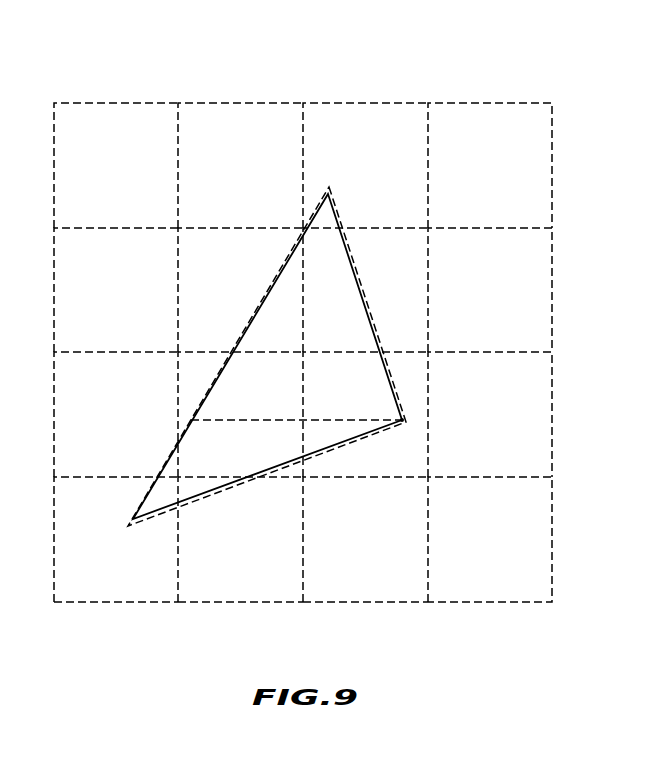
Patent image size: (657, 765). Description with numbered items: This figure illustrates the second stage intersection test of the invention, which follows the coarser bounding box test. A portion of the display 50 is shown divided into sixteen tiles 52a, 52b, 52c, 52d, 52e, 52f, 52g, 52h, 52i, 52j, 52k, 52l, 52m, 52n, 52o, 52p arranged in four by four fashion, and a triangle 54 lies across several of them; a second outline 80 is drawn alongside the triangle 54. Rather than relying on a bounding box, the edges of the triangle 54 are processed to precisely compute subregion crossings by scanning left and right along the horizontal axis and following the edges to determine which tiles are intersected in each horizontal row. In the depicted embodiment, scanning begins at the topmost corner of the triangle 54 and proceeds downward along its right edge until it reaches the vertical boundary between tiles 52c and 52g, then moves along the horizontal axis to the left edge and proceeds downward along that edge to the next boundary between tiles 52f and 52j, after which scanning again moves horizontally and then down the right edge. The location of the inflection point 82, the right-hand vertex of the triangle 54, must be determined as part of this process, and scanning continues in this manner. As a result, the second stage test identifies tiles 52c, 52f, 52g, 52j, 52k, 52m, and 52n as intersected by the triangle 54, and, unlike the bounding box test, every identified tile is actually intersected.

The display 50 is at (602, 61).
The tile 52a is at (110, 138).
The tile 52b is at (235, 138).
The tile 52c is at (418, 138).
The tile 52d is at (538, 138).
The tile 52e is at (110, 262).
The tile 52f is at (233, 262).
The tile 52g is at (414, 319).
The tile 52h is at (538, 262).
The tile 52i is at (110, 463).
The tile 52j is at (199, 362).
The tile 52k is at (414, 370).
The tile 52l is at (540, 463).
The tile 52m is at (112, 587).
The tile 52n is at (235, 587).
The tile 52o is at (420, 587).
The tile 52p is at (541, 587).
The triangle 54 is at (330, 398).
The object outline 80 is at (295, 242).
The inflection point 82 is at (402, 420).